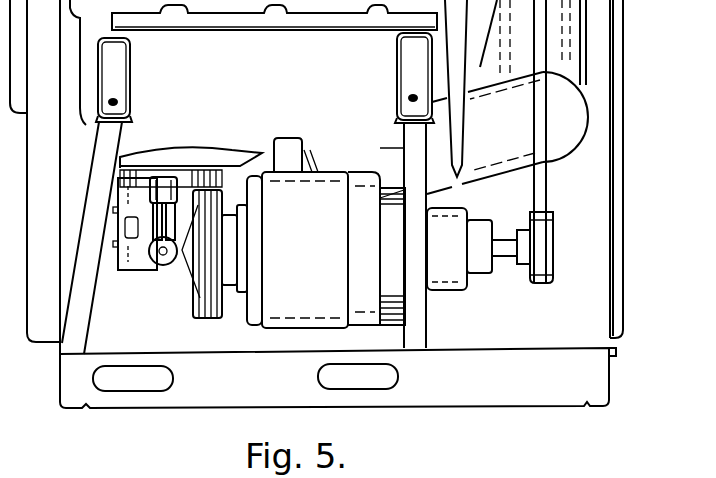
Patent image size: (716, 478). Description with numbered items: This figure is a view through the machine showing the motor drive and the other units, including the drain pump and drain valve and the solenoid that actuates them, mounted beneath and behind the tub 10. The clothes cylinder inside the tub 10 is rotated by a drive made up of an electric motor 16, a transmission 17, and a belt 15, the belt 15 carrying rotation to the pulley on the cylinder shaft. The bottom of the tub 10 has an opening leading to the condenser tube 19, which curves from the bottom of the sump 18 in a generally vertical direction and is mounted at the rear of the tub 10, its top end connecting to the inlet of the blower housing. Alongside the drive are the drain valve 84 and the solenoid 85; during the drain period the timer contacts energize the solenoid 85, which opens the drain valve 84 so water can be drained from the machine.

The tub 10 is at (93, 147).
The belt 15 is at (547, 201).
The electric motor 16 is at (252, 318).
The transmission 17 is at (446, 290).
The sump 18 is at (124, 271).
The condenser tube 19 is at (566, 148).
The drain valve 84 is at (147, 264).
The solenoid 85 is at (168, 176).